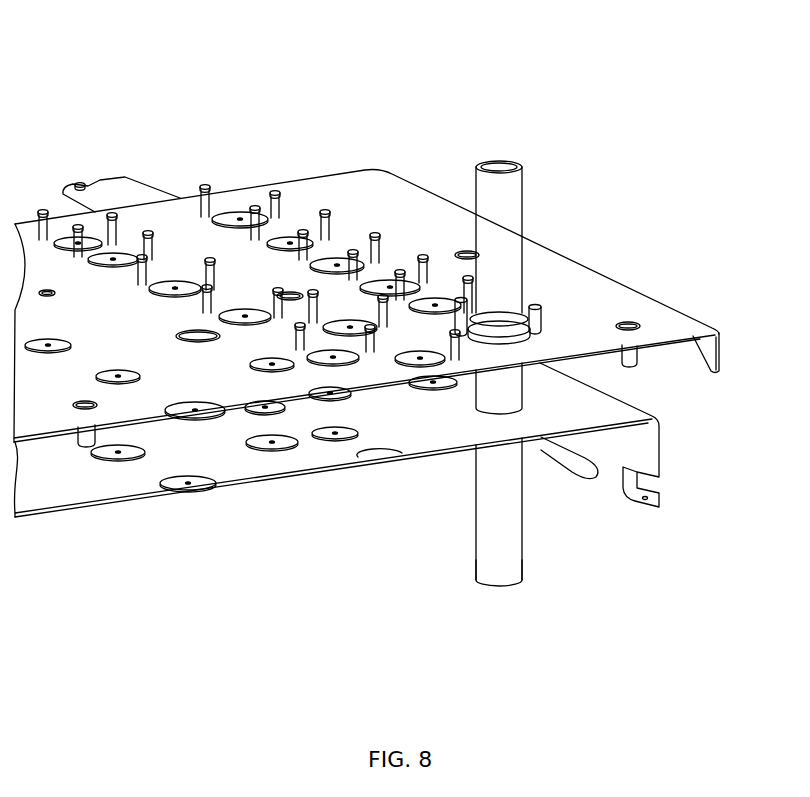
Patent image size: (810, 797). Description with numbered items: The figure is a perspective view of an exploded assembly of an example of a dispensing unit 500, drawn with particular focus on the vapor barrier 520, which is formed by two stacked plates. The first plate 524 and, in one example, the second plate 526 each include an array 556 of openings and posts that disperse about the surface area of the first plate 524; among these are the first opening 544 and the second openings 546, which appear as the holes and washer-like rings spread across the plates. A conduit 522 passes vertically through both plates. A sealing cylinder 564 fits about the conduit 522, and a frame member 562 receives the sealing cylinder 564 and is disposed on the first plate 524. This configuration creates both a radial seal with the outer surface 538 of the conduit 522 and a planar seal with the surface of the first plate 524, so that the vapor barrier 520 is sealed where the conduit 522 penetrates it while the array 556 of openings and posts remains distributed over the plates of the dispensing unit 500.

The dispensing unit 500 is at (626, 64).
The vapor barrier 520 is at (733, 317).
The conduit 522 is at (548, 533).
The first plate 524 is at (397, 197).
The second plate 526 is at (413, 457).
The outer surface 538 is at (523, 563).
The first opening 544 is at (258, 366).
The second openings 546 is at (538, 312).
The array 556 is at (427, 542).
The frame member 562 is at (540, 330).
The sealing cylinder 564 is at (522, 258).